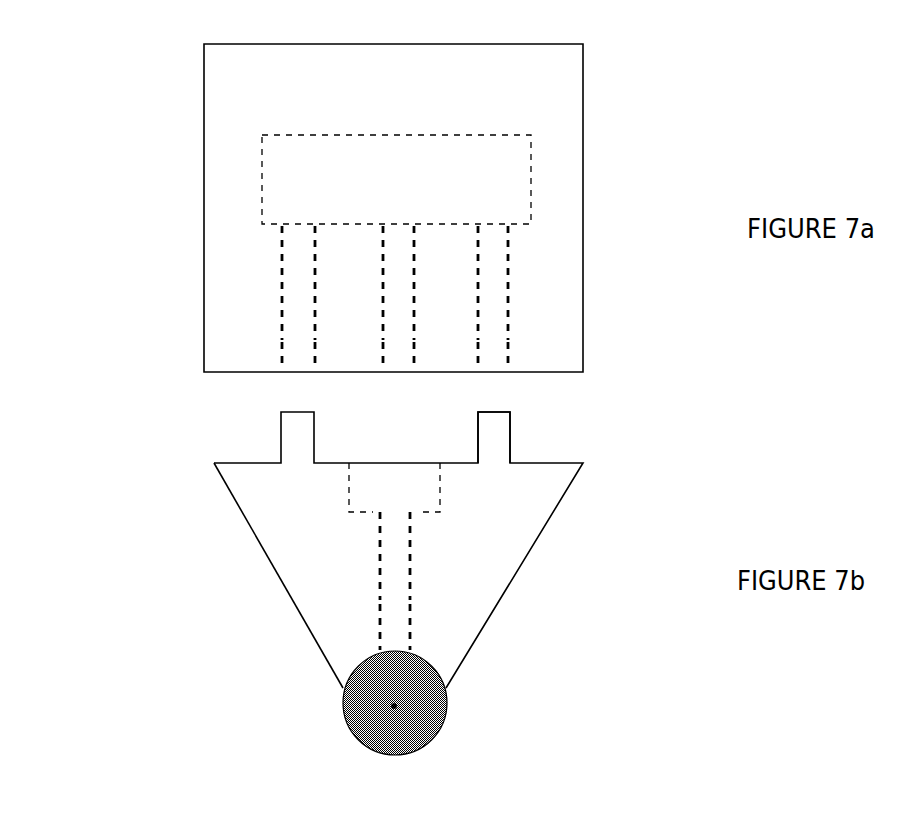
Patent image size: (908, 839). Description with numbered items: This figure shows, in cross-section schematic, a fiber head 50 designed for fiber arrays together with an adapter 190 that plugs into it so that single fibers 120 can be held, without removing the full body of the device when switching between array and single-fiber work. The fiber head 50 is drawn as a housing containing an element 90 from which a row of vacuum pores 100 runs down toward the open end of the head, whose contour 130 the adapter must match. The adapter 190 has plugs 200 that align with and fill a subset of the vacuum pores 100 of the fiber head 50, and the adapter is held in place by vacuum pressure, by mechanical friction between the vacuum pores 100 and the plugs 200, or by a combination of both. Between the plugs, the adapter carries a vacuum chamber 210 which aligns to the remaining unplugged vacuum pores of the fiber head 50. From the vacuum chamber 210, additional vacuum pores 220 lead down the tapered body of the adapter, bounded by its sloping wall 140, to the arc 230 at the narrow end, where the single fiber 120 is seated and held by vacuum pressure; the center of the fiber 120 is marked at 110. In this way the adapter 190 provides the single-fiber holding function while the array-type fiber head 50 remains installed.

In FIG. 7A, the fiber head 50 is at (590, 88).
In FIG. 7A, the integrated circuit 90 is at (387, 128).
In FIG. 7A, the vacuum pores 100 is at (522, 282).
In FIG. 7A, the contour 130 is at (518, 367).
In FIG. 7B, the adapter 190 is at (202, 460).
In FIG. 7B, the sloped wall 140 is at (267, 592).
In FIG. 7B, the plugs 200 is at (513, 442).
In FIG. 7B, the vacuum chamber 210 is at (453, 522).
In FIG. 7B, the additional vacuum pores 220 is at (425, 597).
In FIG. 7B, the arc 230 is at (367, 652).
In FIG. 7B, the single fiber 120 is at (453, 735).
In FIG. 7B, the center point 110 is at (378, 715).